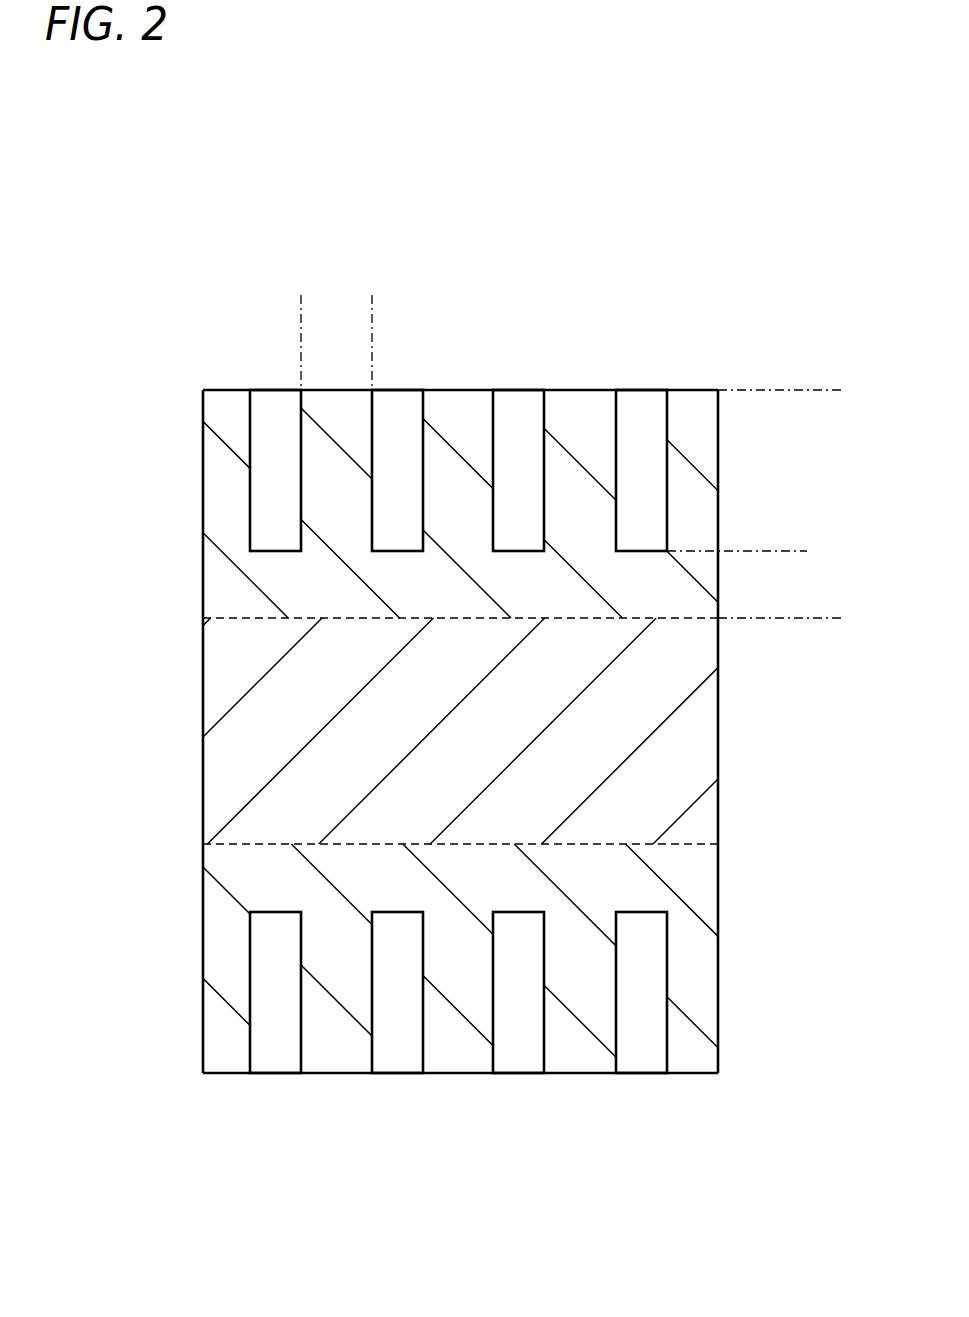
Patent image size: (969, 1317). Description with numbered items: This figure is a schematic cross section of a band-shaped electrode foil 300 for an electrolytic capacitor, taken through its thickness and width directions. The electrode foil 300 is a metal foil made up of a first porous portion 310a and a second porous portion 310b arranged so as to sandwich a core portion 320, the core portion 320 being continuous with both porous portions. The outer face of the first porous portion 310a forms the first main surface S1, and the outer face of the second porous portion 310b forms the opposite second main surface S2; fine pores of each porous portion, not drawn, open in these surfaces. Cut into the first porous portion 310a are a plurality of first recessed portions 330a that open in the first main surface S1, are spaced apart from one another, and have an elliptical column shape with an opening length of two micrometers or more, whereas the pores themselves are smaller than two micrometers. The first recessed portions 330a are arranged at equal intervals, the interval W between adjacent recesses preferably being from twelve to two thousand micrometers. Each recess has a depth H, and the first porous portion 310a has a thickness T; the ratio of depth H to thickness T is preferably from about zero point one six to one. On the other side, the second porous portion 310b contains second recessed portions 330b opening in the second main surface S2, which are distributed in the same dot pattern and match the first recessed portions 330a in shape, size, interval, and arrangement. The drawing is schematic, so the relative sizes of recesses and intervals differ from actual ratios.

The electrode foil 300 is at (189, 333).
The first porous portion 310a is at (227, 572).
The second porous portion 310b is at (215, 920).
The core portion 320 is at (237, 772).
The first recessed portions 330a is at (280, 402).
The second recessed portions 330b is at (277, 1055).
The first main surface S1 is at (468, 388).
The second main surface S2 is at (458, 1077).
The interval W is at (372, 320).
The depth H is at (752, 390).
The thickness T is at (833, 390).